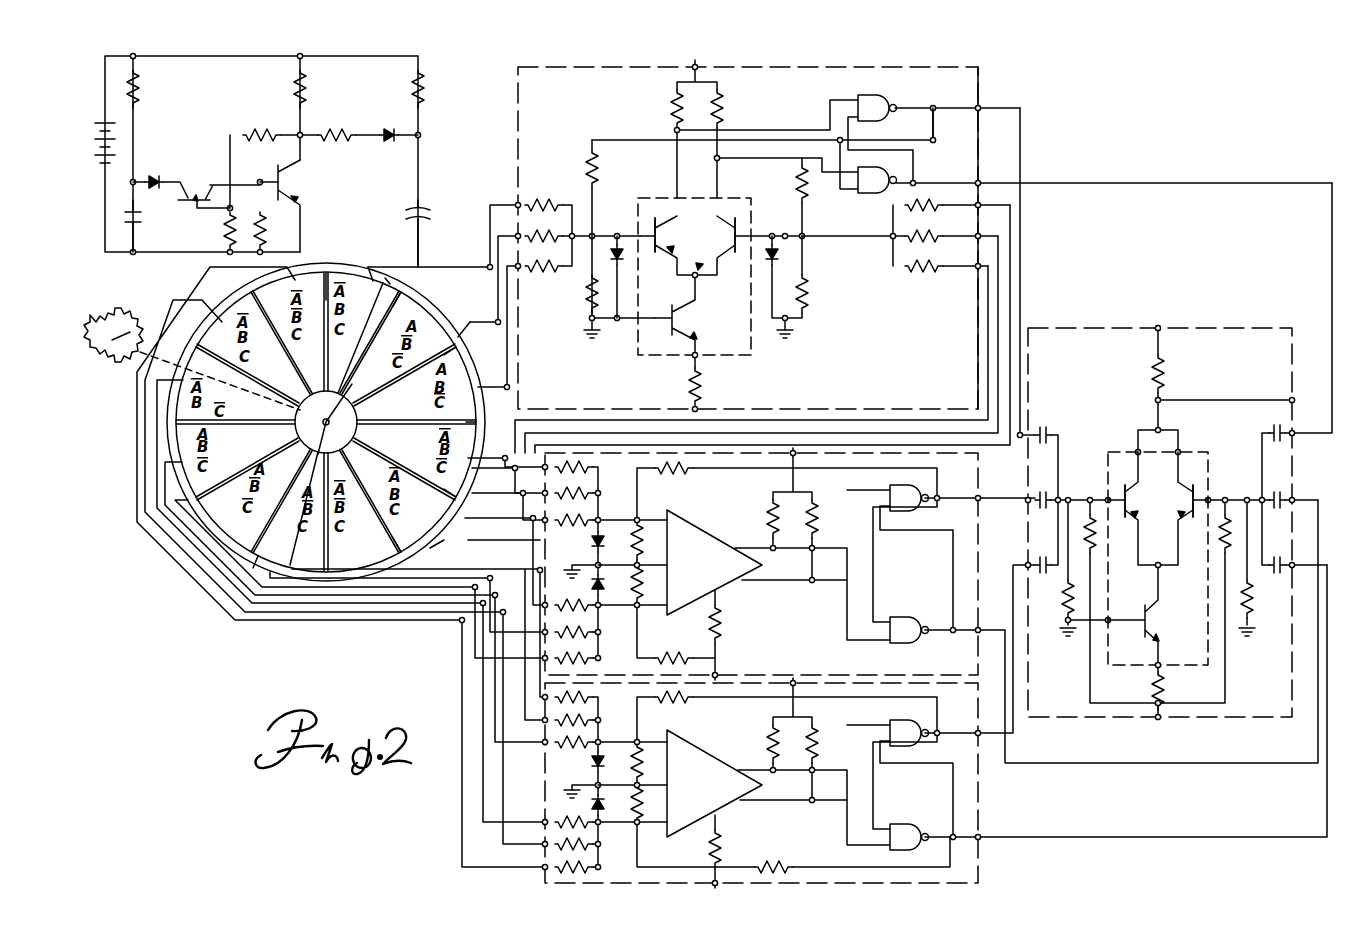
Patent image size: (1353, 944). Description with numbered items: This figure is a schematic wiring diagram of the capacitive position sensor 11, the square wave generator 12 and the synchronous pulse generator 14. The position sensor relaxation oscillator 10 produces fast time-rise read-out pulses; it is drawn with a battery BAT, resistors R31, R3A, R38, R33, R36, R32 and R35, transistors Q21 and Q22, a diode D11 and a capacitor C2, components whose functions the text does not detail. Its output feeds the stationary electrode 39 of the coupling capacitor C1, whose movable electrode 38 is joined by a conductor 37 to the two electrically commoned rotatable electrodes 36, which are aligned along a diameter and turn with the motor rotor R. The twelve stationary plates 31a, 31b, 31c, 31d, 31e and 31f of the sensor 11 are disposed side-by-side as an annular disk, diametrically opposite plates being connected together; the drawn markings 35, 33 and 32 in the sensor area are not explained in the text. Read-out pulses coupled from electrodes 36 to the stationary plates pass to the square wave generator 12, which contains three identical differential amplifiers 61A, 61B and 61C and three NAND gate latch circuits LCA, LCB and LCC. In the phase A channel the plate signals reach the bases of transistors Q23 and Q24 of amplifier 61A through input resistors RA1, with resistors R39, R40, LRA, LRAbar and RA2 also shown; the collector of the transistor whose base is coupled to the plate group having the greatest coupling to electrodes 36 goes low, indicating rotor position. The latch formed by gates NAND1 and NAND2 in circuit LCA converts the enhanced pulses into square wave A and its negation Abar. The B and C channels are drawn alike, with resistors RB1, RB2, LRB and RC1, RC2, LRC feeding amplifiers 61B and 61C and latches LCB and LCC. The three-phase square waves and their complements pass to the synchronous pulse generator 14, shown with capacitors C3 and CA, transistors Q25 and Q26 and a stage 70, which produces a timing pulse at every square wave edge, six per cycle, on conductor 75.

The position sensor relaxation oscillator 10 is at (253, 160).
The resistor R31 is at (140, 80).
The resistor R3A is at (306, 82).
The resistor R38 is at (424, 82).
The battery BAT is at (115, 128).
The diode D11 is at (152, 170).
The transistor Q21 is at (196, 180).
The capacitor C2 is at (141, 218).
The resistor R32 is at (222, 235).
The resistor R35 is at (266, 232).
The transistor Q22 is at (290, 185).
The resistor R33 is at (262, 128).
The resistor R36 is at (340, 142).
The coupling capacitor C1 is at (430, 212).
The stationary electrode 39 is at (428, 200).
The movable electrode 38 is at (410, 215).
The conductor 37 is at (420, 245).
The capacitive position sensor 11 is at (338, 441).
The rotor hub 35 is at (308, 422).
The motor rotor R is at (140, 322).
The stationary plate 31a is at (336, 268).
The stationary plate 31b is at (302, 398).
The stationary plate 31c is at (337, 399).
The stationary plate 31d is at (355, 424).
The stationary plate 31e is at (350, 428).
The stationary plate 31f is at (344, 448).
The rotatable electrodes 36 is at (327, 420).
The coil tab 33 is at (448, 439).
The wiring leads 32 is at (734, 536).
The square wave generator 12 is at (925, 229).
The NAND gate NAND1 is at (872, 95).
The NAND gate NAND2 is at (872, 193).
The NAND gate latch circuit LCA is at (947, 128).
The resistor RA1 is at (545, 197).
The square wave A is at (518, 205).
The resistor R39 is at (598, 168).
The resistor LRA is at (586, 300).
The differential amplifier 61A is at (720, 302).
The transistor Q23 is at (660, 236).
The transistor Q24 is at (740, 220).
The resistor R40 is at (796, 180).
The resistor LRAbar is at (808, 300).
The resistor RA2 is at (905, 245).
The complement of square wave A Abar is at (978, 266).
The differential amplifier 61B is at (761, 564).
The NAND gate latch circuit LCB is at (1095, 617).
The resistor RB1 is at (555, 528).
The resistor RB2 is at (555, 596).
The resistor LRB is at (640, 520).
The differential amplifier 61C is at (761, 783).
The NAND gate latch circuit LCC is at (1100, 707).
The resistor RC1 is at (596, 704).
The resistor RC2 is at (555, 814).
The resistor LRC is at (640, 742).
The synchronous pulse generator 14 is at (1095, 718).
The conductor 75 is at (1296, 396).
The differential amplifier 70 is at (1158, 560).
The transistor Q25 is at (1130, 500).
The transistor Q26 is at (1200, 482).
The capacitor C3 is at (1052, 428).
The capacitor CA is at (1268, 425).